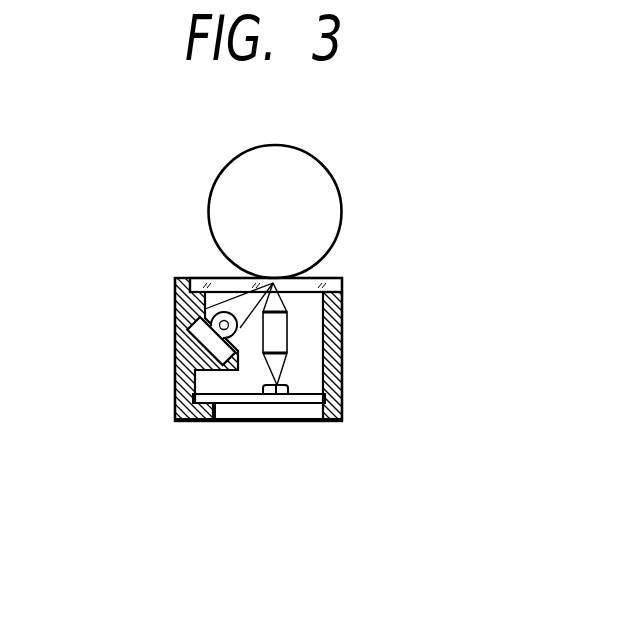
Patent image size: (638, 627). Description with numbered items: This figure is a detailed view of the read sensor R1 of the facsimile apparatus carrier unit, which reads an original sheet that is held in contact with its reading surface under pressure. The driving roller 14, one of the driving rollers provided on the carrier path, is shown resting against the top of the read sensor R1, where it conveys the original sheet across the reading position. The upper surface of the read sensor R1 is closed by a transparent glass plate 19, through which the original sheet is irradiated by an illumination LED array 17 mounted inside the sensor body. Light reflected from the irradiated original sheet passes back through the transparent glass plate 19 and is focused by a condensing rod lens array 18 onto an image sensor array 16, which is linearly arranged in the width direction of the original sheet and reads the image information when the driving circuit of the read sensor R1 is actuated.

The driving roller 14 is at (327, 204).
The image sensor array 16 is at (277, 392).
The illumination LED array 17 is at (200, 326).
The condensing rod lens array 18 is at (280, 324).
The transparent glass plate 19 is at (217, 278).
The read sensor R1 is at (350, 408).